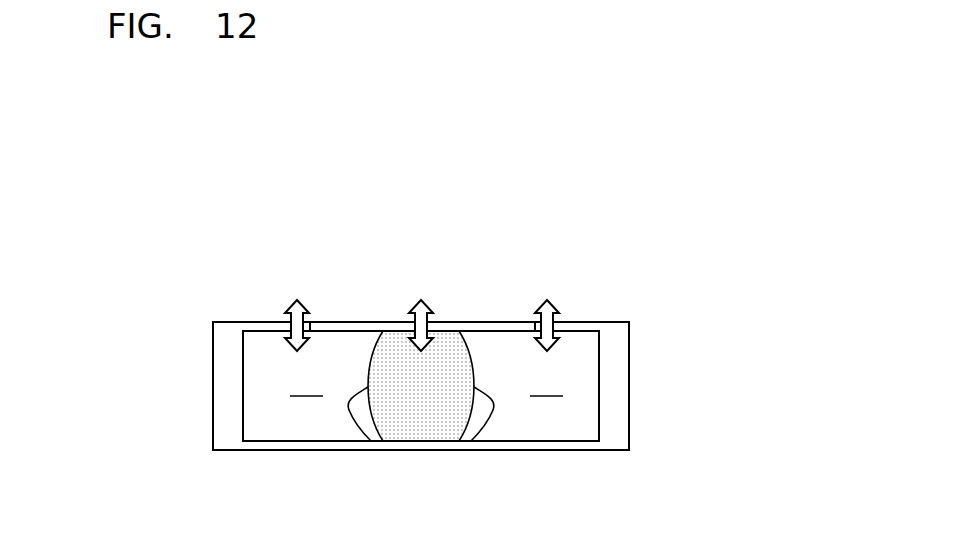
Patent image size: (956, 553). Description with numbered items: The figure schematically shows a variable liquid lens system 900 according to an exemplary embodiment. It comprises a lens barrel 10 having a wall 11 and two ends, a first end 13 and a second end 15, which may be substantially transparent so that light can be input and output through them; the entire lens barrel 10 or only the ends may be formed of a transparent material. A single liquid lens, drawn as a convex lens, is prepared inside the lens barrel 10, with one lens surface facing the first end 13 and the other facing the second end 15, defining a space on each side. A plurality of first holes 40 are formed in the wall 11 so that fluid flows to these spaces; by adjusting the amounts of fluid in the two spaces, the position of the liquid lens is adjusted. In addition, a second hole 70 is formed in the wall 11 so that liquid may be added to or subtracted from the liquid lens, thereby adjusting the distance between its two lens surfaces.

The variable liquid lens system 900 is at (662, 200).
The lens barrel 10 is at (640, 310).
The wall 11 is at (486, 335).
The first end 13 is at (225, 389).
The second end 15 is at (623, 389).
The first holes 40 is at (309, 316).
The second hole 70 is at (434, 325).